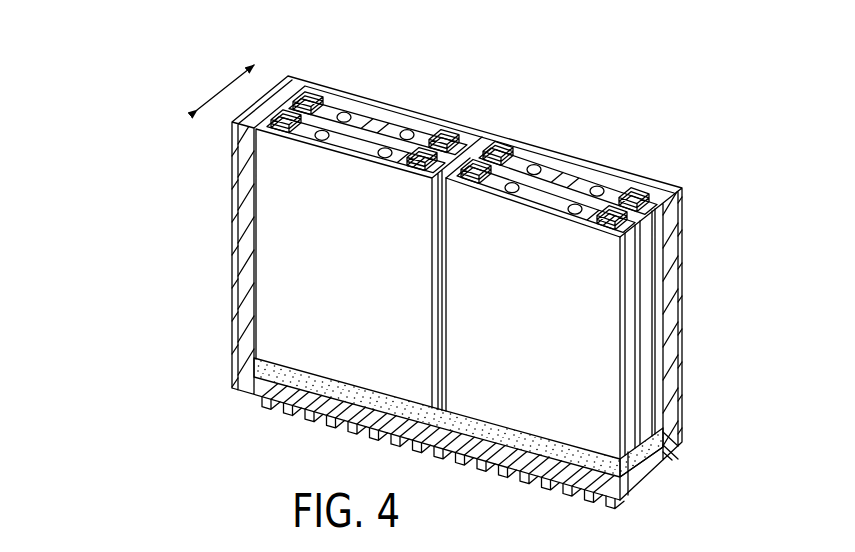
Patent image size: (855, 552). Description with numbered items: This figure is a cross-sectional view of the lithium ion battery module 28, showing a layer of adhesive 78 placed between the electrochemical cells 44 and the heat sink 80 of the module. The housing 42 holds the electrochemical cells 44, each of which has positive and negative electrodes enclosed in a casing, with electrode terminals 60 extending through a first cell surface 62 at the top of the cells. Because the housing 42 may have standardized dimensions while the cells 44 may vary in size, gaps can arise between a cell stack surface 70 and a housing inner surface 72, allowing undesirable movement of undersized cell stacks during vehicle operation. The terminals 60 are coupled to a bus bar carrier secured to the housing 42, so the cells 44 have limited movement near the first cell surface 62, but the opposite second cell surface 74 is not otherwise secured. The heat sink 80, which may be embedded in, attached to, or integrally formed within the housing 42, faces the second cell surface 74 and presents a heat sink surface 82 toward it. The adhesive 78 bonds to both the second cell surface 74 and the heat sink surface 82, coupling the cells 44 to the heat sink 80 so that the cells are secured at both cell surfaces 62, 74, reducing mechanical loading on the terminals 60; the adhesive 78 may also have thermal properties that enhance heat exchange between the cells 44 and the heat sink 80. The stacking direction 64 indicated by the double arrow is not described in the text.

The battery module 28 is at (138, 76).
The housing 42 is at (684, 289).
The electrochemical cells 44 is at (600, 178).
The electrode terminals 60 is at (313, 103).
The first cell surface 62 is at (407, 132).
The stacking direction 64 is at (228, 86).
The cell stack surface 70 is at (275, 230).
The housing inner surface 72 is at (512, 148).
The second cell surface 74 is at (267, 365).
The adhesive 78 is at (662, 446).
The heat sink 80 is at (362, 410).
The heat sink surface 82 is at (630, 478).